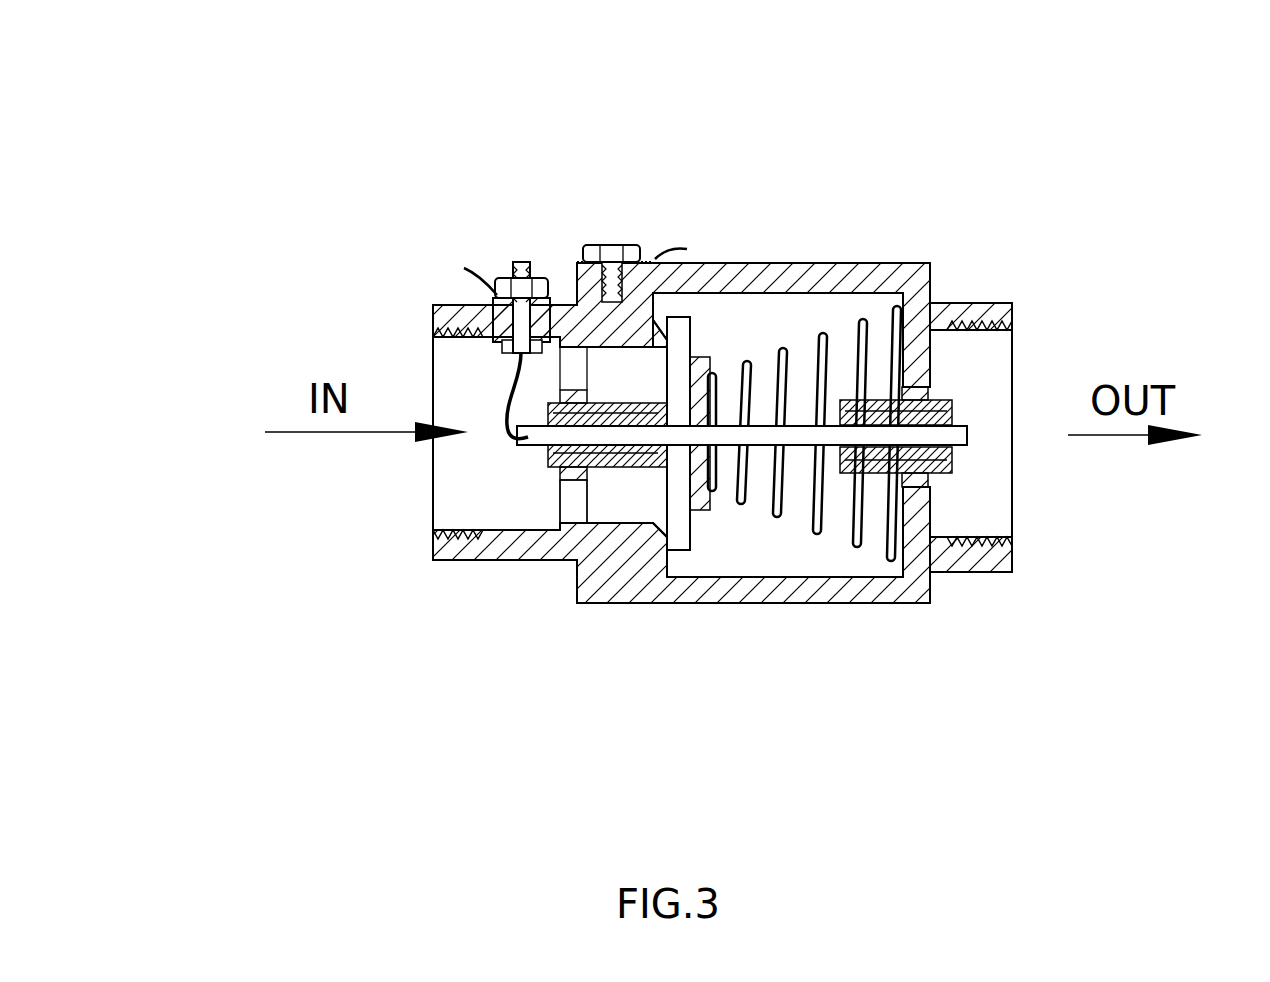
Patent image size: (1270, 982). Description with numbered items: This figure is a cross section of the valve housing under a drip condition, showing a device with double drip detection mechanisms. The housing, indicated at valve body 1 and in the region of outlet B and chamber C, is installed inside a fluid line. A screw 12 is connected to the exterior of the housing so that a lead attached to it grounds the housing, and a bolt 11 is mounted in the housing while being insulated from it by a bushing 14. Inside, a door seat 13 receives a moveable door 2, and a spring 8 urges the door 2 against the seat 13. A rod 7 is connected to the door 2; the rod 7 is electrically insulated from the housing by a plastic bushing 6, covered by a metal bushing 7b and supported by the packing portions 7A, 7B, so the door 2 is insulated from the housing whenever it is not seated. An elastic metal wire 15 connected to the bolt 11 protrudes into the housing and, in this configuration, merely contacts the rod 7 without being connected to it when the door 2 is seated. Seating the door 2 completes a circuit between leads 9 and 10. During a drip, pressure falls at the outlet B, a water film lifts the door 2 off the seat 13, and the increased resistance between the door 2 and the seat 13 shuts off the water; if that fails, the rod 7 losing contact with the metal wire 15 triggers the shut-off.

The valve body 1 is at (674, 469).
The door 2 is at (790, 567).
The plastic bushing 6 is at (1002, 624).
The rod 7 is at (701, 541).
The lower left packing 7A is at (482, 600).
The right packing gland 7B is at (1027, 240).
The metal bushing 7b is at (690, 302).
The spring 8 is at (822, 341).
The lead 9 is at (690, 187).
The lead 10 is at (377, 185).
The bolt 11 is at (440, 184).
The screw 12 is at (665, 181).
The door seat 13 is at (525, 561).
The bushing 14 is at (389, 248).
The metal wire 15 is at (387, 322).
The outlet B is at (539, 501).
The spring chamber C is at (838, 527).